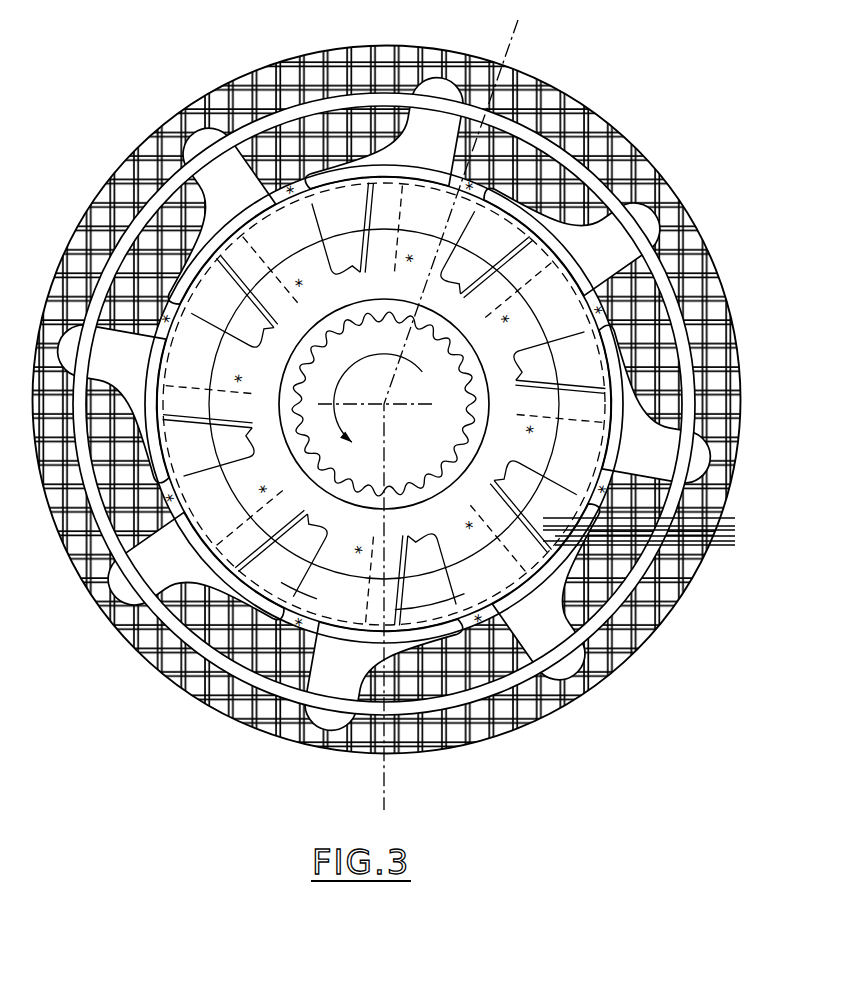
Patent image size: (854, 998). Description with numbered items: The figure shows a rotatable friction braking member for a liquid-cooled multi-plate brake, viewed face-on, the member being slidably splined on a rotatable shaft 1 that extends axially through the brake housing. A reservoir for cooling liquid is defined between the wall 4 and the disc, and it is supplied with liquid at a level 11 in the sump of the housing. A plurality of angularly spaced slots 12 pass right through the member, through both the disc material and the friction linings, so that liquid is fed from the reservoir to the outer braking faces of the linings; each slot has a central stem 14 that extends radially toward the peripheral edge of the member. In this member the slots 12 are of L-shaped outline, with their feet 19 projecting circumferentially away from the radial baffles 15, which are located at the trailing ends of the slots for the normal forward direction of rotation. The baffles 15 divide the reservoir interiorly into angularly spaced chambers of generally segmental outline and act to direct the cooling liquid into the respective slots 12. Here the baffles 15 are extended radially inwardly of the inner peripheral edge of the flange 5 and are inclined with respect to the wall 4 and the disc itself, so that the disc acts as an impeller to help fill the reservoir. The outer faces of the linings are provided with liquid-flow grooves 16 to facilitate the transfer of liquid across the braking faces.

The rotatable shaft 1 is at (420, 442).
The wall 4 is at (522, 30).
The flange 5 is at (305, 640).
The liquid level 11 is at (728, 536).
The slots 12 is at (696, 462).
The central stem 14 is at (430, 92).
The radial baffles 15 is at (390, 258).
The liquid-flow grooves 16 is at (618, 148).
The feet 19 is at (530, 207).